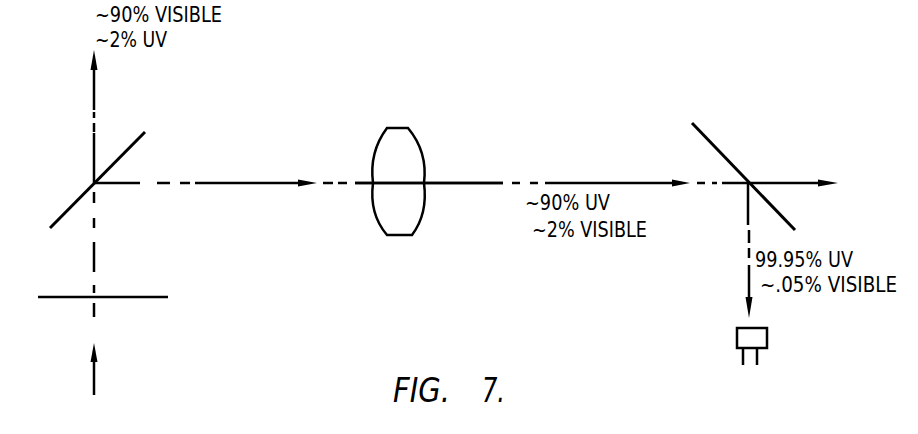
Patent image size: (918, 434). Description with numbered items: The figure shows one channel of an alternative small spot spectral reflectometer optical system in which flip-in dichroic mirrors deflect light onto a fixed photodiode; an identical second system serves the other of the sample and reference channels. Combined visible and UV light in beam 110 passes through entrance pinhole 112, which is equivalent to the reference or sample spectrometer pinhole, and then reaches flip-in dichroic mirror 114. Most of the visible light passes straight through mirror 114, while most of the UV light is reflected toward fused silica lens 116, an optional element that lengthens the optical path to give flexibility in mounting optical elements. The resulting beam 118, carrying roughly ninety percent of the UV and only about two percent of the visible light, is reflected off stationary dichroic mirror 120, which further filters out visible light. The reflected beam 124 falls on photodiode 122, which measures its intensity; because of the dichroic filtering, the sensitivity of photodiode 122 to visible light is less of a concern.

The beam 110 is at (97, 377).
The entrance pinhole 112 is at (118, 297).
The flip-in dichroic mirror 114 is at (140, 137).
The fused silica lens 116 is at (402, 128).
The beam 118 is at (493, 183).
The stationary dichroic mirror 120 is at (702, 133).
The photodiode 122 is at (767, 337).
The beam 124 is at (748, 226).